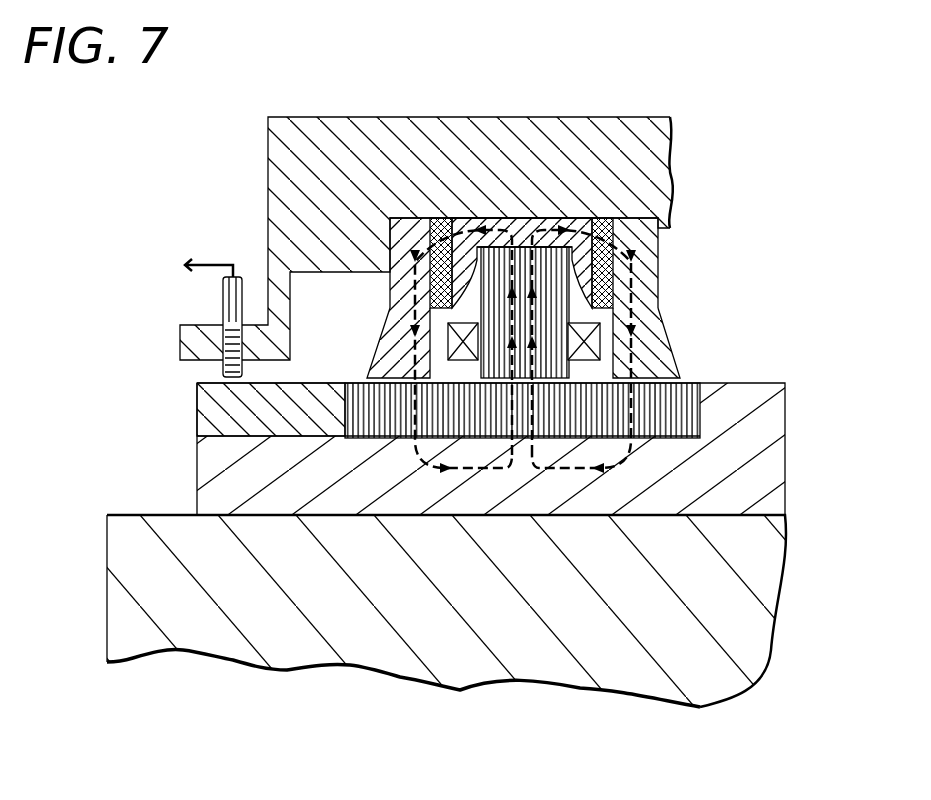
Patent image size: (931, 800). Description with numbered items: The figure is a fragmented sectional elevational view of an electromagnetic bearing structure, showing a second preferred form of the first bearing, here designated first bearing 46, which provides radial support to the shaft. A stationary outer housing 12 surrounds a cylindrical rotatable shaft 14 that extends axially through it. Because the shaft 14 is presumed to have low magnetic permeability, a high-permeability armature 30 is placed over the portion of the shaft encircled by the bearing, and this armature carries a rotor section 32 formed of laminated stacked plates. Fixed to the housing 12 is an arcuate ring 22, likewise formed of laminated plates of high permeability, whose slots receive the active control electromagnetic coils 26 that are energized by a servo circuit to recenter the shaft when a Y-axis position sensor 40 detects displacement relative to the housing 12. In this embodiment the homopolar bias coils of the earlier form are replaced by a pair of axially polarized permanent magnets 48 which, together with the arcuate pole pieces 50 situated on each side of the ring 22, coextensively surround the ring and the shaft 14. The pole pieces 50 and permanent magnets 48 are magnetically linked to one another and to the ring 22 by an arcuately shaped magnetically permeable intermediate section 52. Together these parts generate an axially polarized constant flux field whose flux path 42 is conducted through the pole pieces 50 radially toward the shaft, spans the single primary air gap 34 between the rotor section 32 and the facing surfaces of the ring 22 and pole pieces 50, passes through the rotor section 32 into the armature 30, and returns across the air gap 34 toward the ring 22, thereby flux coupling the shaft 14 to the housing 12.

The outer housing 12 is at (543, 117).
The shaft 14 is at (545, 665).
The arcuate ring 22 is at (580, 305).
The active control electromagnetic coils 26 is at (447, 338).
The armature 30 is at (728, 470).
The rotor section 32 is at (690, 410).
The primary air gap 34 is at (673, 378).
The Y-axis position sensor 40 is at (222, 305).
The magnetic flux path 42 is at (625, 235).
The first bearing 46 is at (695, 217).
The permanent magnets 48 is at (436, 286).
The pole pieces 50 is at (388, 356).
The intermediate section 52 is at (512, 215).